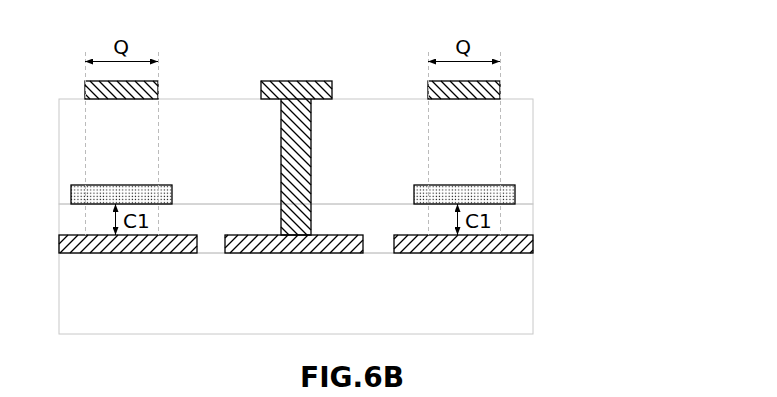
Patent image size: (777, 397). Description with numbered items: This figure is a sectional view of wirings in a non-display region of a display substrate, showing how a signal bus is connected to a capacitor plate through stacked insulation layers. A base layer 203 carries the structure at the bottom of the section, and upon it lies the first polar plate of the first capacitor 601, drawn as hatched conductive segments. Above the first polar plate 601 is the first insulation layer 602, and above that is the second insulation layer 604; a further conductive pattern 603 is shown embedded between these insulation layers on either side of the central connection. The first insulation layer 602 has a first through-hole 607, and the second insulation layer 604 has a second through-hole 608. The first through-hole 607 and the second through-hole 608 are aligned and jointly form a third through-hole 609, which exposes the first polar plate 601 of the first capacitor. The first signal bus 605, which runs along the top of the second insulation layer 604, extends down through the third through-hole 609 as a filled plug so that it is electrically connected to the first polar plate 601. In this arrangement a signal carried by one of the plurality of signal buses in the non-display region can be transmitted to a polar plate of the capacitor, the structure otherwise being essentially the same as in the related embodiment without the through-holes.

The substrate 203 is at (498, 326).
The first polar plate of the first capacitor 601 is at (527, 242).
The first insulation layer 602 is at (505, 222).
The second conductive pattern 603 is at (508, 193).
The second insulation layer 604 is at (507, 148).
The first signal bus 605 is at (330, 91).
The first through-hole 607 is at (312, 218).
The second through-hole 608 is at (312, 172).
The third through-hole 609 is at (312, 130).